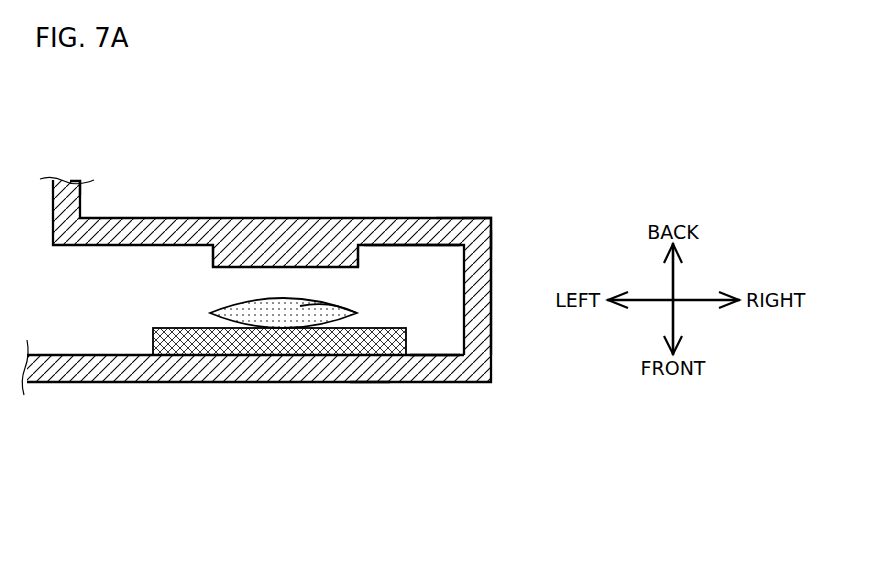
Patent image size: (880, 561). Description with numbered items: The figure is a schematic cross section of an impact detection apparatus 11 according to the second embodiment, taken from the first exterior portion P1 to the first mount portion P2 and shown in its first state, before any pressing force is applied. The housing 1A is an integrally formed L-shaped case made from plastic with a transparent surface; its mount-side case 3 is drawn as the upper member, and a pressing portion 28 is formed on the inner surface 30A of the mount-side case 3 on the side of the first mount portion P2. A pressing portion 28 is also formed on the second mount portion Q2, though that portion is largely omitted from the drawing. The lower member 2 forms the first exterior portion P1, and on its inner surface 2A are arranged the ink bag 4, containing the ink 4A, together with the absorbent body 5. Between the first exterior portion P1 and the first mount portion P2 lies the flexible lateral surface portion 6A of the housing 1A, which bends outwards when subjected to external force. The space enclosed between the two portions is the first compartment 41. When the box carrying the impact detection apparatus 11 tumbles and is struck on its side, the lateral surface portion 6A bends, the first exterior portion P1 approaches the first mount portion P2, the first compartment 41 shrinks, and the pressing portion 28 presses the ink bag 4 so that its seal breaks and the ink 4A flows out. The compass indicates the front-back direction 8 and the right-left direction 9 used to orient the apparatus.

The mount-side case 3 is at (161, 146).
The exterior-side case 2 is at (199, 397).
The absorbent body 5 is at (195, 326).
The ink bag 4 is at (290, 299).
The ink 4A is at (328, 307).
The first compartment 41 is at (360, 289).
The inner surface 30A is at (407, 249).
The pressing portion 28 is at (212, 258).
The second mount portion Q2 is at (82, 191).
The first mount portion P2 is at (448, 218).
The housing 1A is at (475, 218).
The lateral surface portion 6A is at (492, 329).
The first exterior portion P1 is at (368, 384).
The inner surface 2A is at (433, 351).
The impact detection apparatus 11 is at (529, 198).
The front-back direction 8 is at (670, 276).
The right-left direction 9 is at (703, 297).